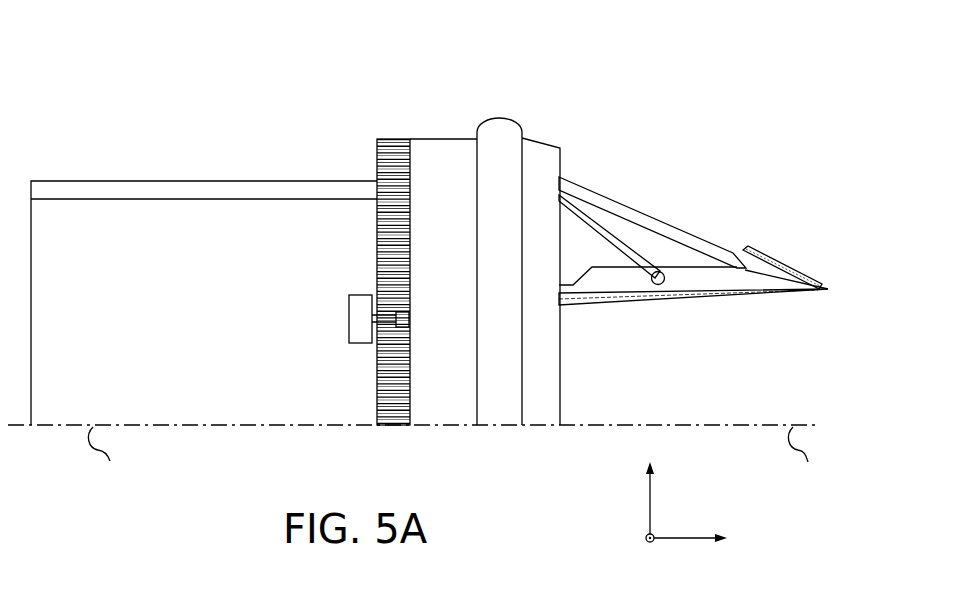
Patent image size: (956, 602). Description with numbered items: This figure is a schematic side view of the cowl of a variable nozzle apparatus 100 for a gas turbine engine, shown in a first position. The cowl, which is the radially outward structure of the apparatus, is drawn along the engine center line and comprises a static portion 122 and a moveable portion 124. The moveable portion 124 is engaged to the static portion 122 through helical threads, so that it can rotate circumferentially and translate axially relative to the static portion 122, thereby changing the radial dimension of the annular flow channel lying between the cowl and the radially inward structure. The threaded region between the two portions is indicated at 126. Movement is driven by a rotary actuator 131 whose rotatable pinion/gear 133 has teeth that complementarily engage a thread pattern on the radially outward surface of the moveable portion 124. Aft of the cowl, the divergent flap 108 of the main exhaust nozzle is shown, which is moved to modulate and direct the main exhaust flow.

The variable nozzle apparatus 100 is at (91, 60).
The divergent flap 108 is at (737, 298).
The static portion 122 is at (237, 311).
The moveable portion 124 is at (457, 237).
The hinge / support column 126 is at (394, 441).
The actuator 131 is at (349, 320).
The pinion/gear 133 is at (397, 314).